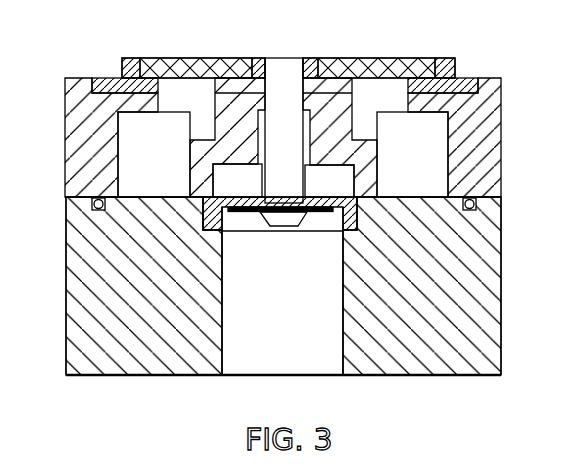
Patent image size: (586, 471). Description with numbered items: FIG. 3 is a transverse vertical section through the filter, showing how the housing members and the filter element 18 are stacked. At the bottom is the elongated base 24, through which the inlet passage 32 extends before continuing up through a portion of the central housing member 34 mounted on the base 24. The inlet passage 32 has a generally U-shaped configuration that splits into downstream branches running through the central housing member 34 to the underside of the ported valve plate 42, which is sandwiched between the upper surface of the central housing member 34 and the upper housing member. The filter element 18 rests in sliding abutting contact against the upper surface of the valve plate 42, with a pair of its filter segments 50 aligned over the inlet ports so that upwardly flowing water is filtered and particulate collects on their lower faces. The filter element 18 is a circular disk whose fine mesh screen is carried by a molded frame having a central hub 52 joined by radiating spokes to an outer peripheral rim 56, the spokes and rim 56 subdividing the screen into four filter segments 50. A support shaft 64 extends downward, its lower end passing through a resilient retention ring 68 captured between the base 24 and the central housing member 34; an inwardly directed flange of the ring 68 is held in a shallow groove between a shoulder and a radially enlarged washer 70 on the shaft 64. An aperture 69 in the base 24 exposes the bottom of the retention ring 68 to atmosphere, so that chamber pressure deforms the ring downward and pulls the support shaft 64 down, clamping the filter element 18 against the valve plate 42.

The filter element 18 is at (468, 55).
The base 24 is at (488, 349).
The inlet passage 32 is at (118, 158).
The central housing member 34 is at (490, 127).
The ported valve plate 42 is at (103, 78).
The filter segments 50 is at (200, 35).
The central hub 52 is at (308, 59).
The outer peripheral rim 56 is at (455, 72).
The support shaft 64 is at (265, 176).
The resilient retention ring 68 is at (222, 232).
The aperture 69 is at (228, 374).
The washer 70 is at (324, 214).